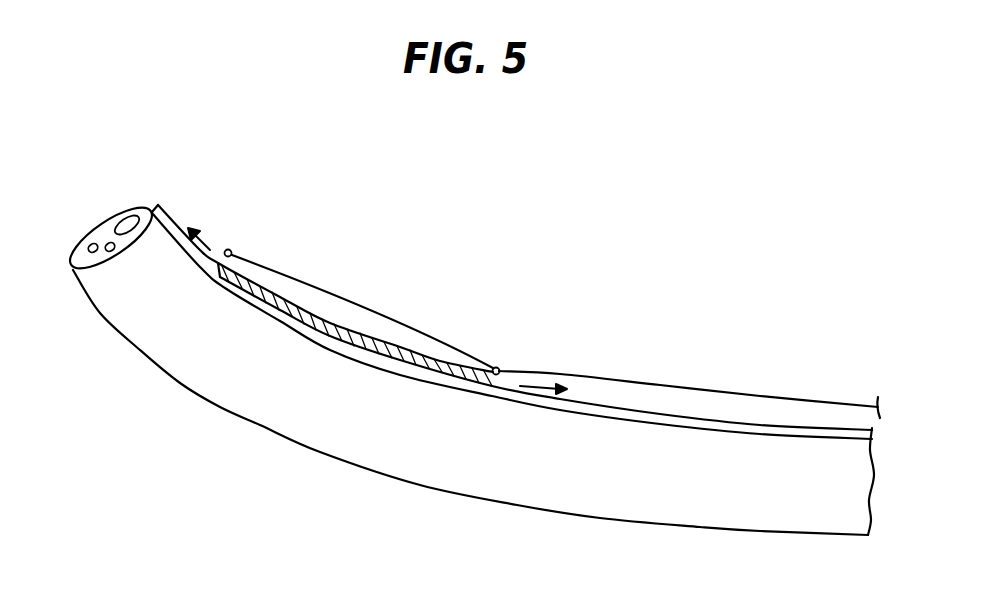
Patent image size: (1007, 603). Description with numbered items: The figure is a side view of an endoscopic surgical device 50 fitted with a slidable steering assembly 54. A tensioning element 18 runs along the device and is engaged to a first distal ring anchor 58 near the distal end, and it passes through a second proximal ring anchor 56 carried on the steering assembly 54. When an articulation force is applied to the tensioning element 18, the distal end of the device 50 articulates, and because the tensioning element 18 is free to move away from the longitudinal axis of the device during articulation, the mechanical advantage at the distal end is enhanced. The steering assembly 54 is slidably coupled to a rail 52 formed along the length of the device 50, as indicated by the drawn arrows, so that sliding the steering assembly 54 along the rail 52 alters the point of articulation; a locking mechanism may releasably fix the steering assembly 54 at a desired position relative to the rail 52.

The tensioning element 18 is at (363, 307).
The device 50 is at (157, 325).
The rail 52 is at (541, 406).
The steering assembly 54 is at (353, 354).
The second proximal ring anchor 56 is at (498, 366).
The first distal ring anchor 58 is at (229, 250).